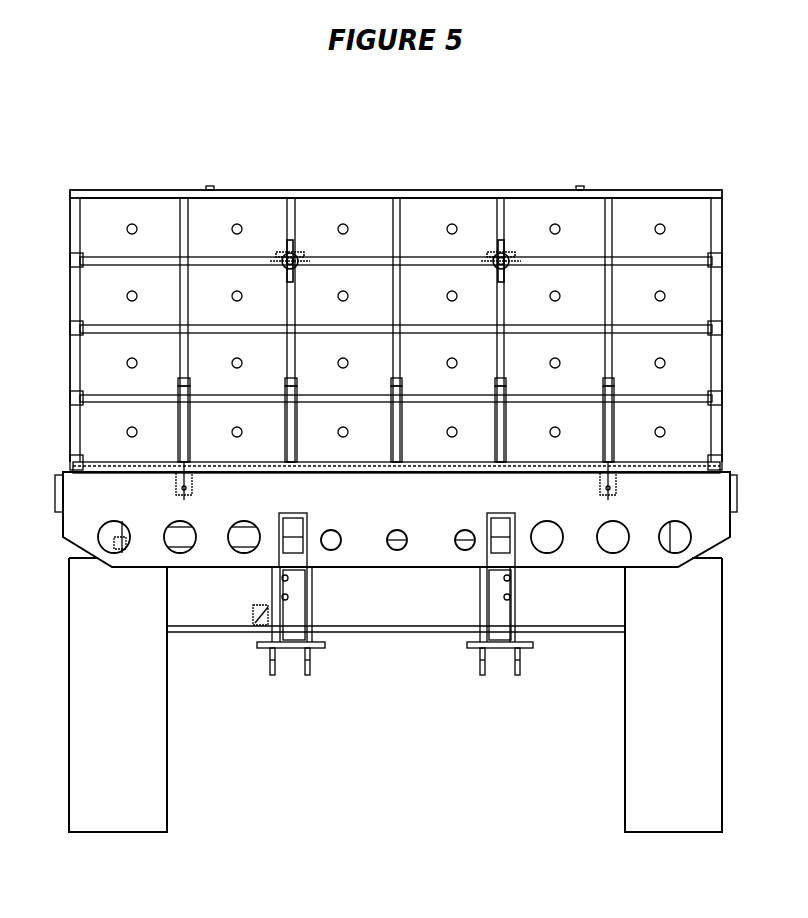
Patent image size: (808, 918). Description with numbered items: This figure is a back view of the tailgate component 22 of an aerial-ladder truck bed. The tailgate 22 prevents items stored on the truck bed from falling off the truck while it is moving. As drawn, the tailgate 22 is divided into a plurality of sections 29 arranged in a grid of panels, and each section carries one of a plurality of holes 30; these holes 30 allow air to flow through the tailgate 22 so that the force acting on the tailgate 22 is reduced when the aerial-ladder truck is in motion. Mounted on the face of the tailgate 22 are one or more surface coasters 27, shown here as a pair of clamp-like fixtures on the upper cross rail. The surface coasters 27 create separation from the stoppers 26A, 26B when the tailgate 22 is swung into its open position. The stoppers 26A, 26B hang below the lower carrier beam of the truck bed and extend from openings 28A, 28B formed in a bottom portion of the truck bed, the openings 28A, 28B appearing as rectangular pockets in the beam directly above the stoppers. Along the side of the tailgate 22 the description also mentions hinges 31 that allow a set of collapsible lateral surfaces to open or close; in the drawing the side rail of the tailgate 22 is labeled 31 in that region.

The tailgate component 22 is at (549, 157).
The stopper 26A is at (295, 548).
The stopper 26B is at (501, 548).
The surface coaster 27 is at (292, 243).
The opening 28A is at (298, 525).
The opening 28B is at (505, 525).
The section 29 is at (660, 242).
The hole 30 is at (452, 223).
The side rail 31 is at (74, 438).